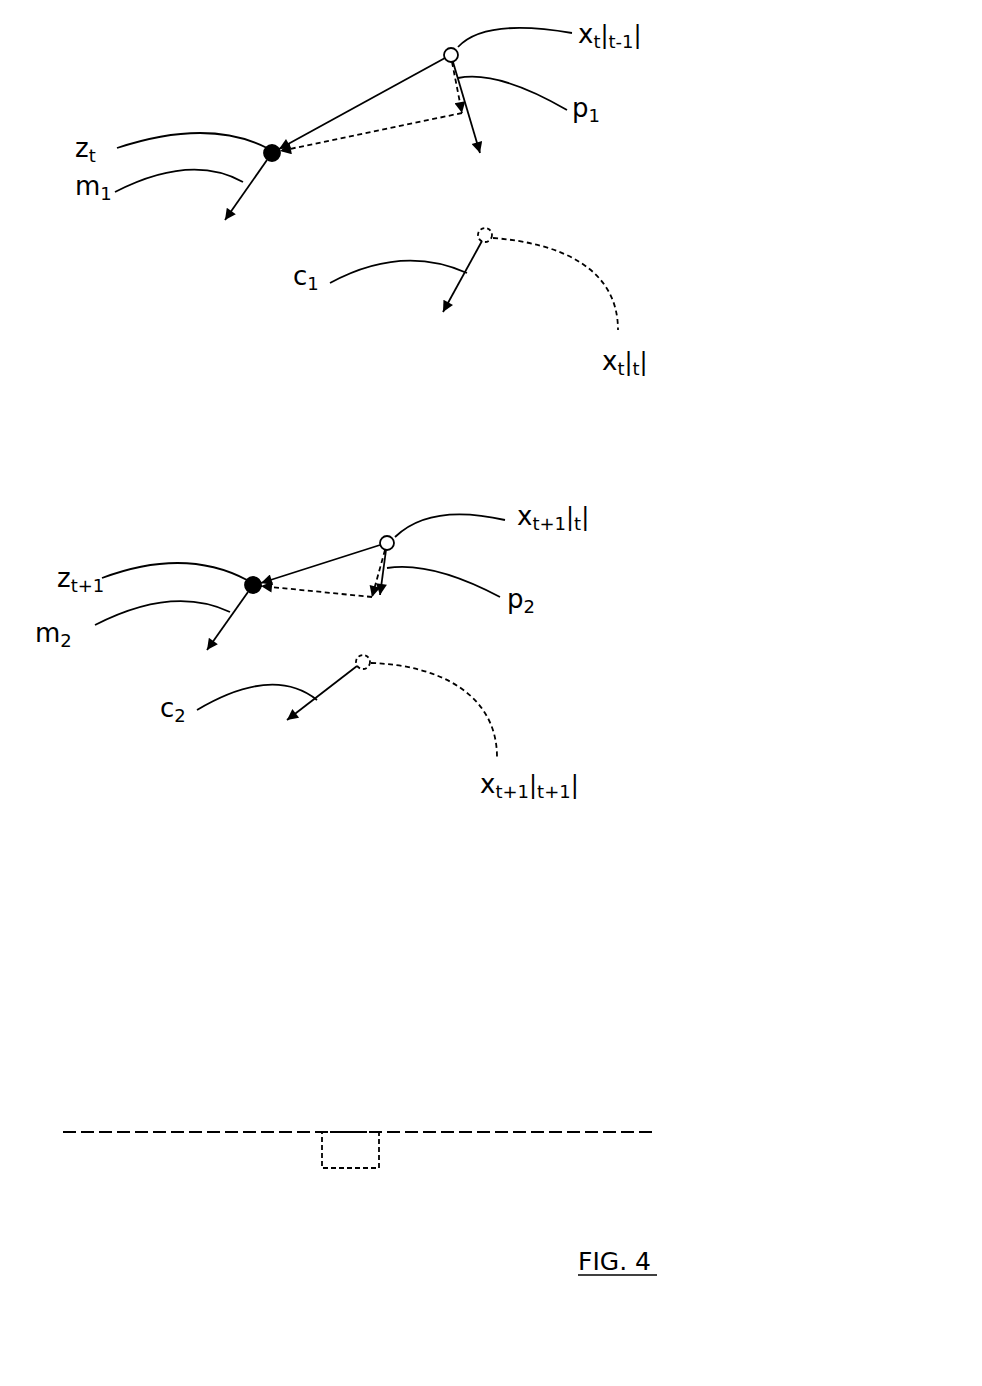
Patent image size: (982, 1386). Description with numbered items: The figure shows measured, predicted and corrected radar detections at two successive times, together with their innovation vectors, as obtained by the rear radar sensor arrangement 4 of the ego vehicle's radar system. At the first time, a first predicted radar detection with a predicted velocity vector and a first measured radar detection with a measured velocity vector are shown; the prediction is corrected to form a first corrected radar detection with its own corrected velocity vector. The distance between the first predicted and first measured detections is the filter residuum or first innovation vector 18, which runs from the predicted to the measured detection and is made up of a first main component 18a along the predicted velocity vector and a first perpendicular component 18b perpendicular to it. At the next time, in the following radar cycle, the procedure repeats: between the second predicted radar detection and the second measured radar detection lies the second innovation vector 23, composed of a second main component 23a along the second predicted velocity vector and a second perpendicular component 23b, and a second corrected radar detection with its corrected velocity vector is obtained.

The first innovation vector 18 is at (385, 87).
The first main component 18a is at (453, 88).
The first perpendicular component 18b is at (363, 133).
The second innovation vector 23 is at (345, 553).
The second main component 23a is at (375, 580).
The second perpendicular component 23b is at (332, 597).
The rear radar sensor arrangement 4 is at (365, 1148).